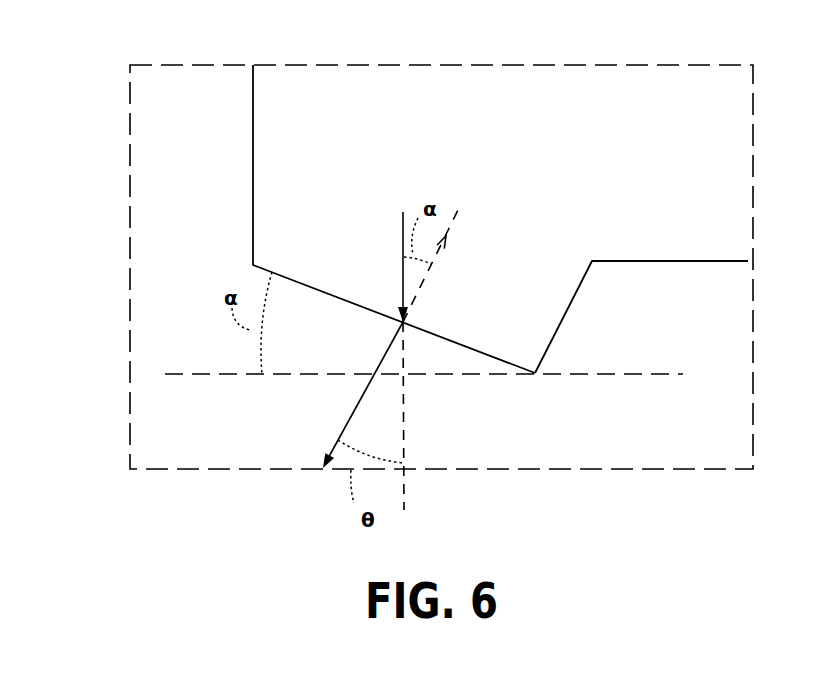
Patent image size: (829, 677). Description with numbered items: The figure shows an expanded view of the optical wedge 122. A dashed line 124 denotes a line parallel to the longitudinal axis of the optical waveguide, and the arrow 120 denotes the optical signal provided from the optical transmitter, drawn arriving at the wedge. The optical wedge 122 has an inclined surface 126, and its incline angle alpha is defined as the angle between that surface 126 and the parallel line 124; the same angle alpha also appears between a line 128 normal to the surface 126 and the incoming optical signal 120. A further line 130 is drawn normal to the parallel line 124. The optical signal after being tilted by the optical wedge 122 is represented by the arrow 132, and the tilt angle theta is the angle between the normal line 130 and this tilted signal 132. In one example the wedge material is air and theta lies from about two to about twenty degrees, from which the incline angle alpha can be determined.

The optical signal 120 is at (402, 277).
The optical wedge 122 is at (148, 65).
The dashed line parallel to the longitudinal axis 124 is at (498, 375).
The surface of the optical wedge 126 is at (340, 296).
The line normal to the surface 128 is at (451, 267).
The line normal to the parallel line 130 is at (413, 516).
The tilted optical signal 132 is at (328, 458).